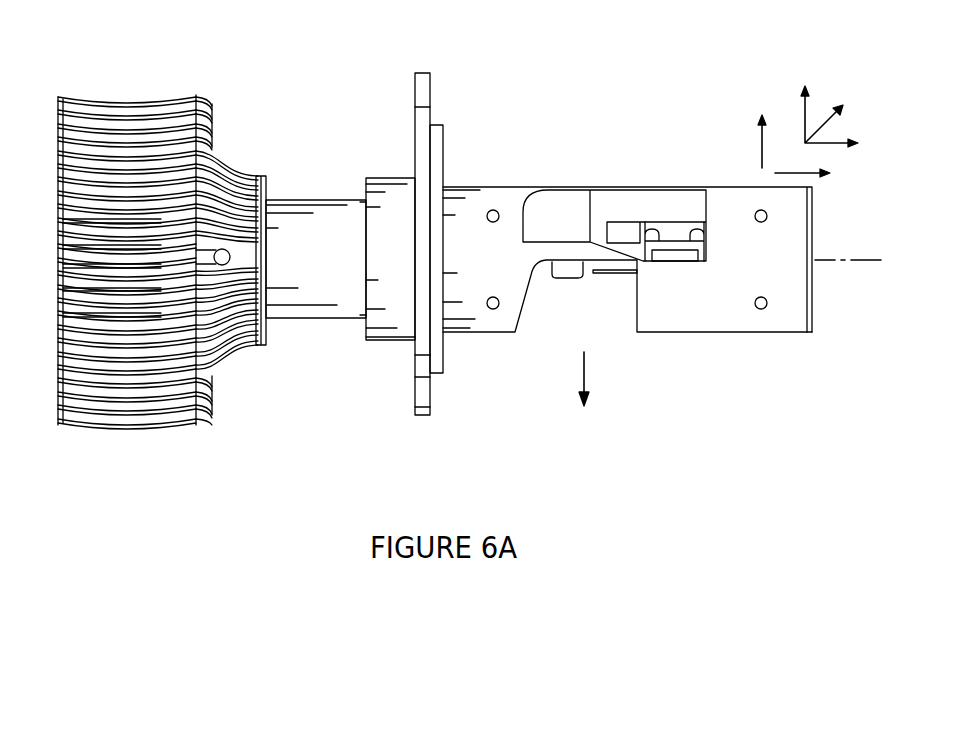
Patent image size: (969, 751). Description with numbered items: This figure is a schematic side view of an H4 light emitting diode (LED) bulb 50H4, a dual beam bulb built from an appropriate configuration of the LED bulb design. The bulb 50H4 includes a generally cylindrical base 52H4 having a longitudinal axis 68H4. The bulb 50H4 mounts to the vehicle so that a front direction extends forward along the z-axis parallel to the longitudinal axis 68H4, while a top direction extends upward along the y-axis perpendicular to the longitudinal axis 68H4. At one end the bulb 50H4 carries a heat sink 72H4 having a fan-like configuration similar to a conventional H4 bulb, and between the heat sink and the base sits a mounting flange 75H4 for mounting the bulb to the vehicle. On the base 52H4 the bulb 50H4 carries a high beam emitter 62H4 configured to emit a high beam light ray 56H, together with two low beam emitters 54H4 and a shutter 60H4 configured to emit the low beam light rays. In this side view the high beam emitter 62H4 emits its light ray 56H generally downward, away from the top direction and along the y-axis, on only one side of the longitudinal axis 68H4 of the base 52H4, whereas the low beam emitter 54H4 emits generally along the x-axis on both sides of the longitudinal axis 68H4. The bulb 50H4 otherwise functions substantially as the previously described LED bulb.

The heat sink 72H4 is at (117, 112).
The H4 light emitting diode (LED) bulb 50H4 is at (728, 78).
The low beam emitter 54H4 is at (620, 200).
The base 52H4 is at (812, 240).
The longitudinal axis 68H4 is at (822, 260).
The shutter 60H4 is at (685, 272).
The high beam emitter 62H4 is at (584, 296).
The high beam light ray 56H is at (586, 368).
The mounting flange 75H4 is at (422, 415).